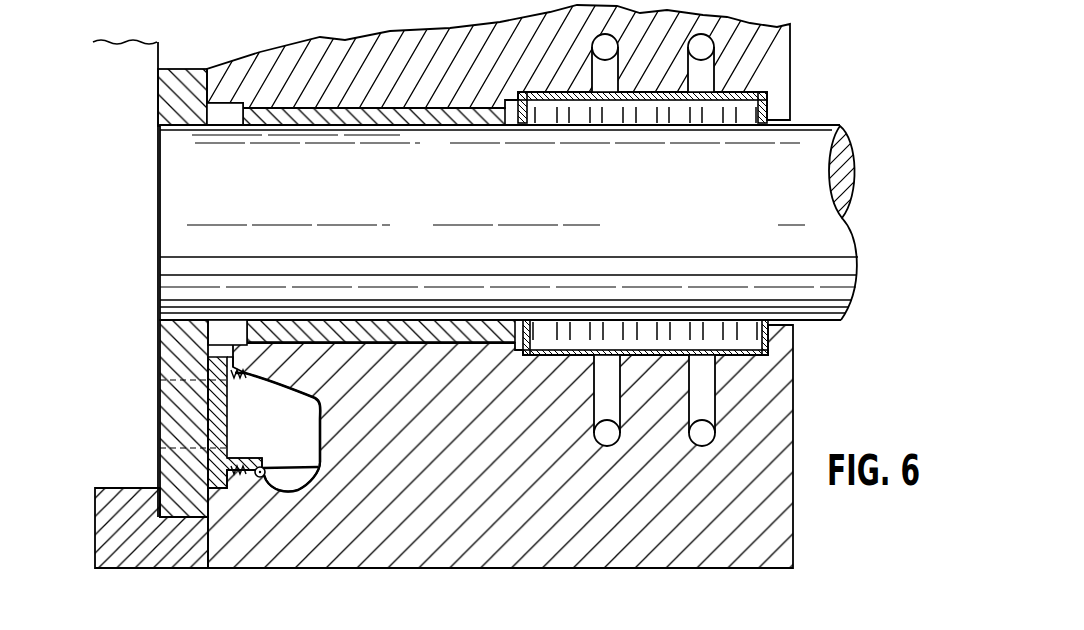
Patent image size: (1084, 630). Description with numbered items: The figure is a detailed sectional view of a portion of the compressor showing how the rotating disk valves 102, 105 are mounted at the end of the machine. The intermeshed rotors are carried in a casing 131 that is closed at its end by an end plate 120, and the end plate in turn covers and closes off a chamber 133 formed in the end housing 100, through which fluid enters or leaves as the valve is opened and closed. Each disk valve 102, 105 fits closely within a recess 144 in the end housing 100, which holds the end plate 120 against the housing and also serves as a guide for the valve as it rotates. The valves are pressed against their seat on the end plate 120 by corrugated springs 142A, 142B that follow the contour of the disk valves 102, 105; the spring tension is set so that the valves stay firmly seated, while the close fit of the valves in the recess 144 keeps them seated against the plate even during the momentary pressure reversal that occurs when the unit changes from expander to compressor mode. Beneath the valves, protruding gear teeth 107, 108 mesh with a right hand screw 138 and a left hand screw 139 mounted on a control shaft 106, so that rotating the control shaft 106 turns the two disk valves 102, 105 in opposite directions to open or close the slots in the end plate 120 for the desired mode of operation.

The housing 100 is at (143, 65).
The disk valve 102 is at (210, 462).
The disk valve 105 is at (141, 552).
The control shaft 106 is at (264, 479).
The gear teeth 107 is at (310, 450).
The gear teeth 108 is at (281, 524).
The end plate 120 is at (174, 408).
The casing 131 is at (127, 488).
The chamber 133 is at (320, 438).
The right hand screw 138 is at (330, 467).
The left hand screw 139 is at (333, 482).
The corrugated spring 142A is at (239, 478).
The corrugated spring 142B is at (231, 370).
The recess 144 is at (212, 492).